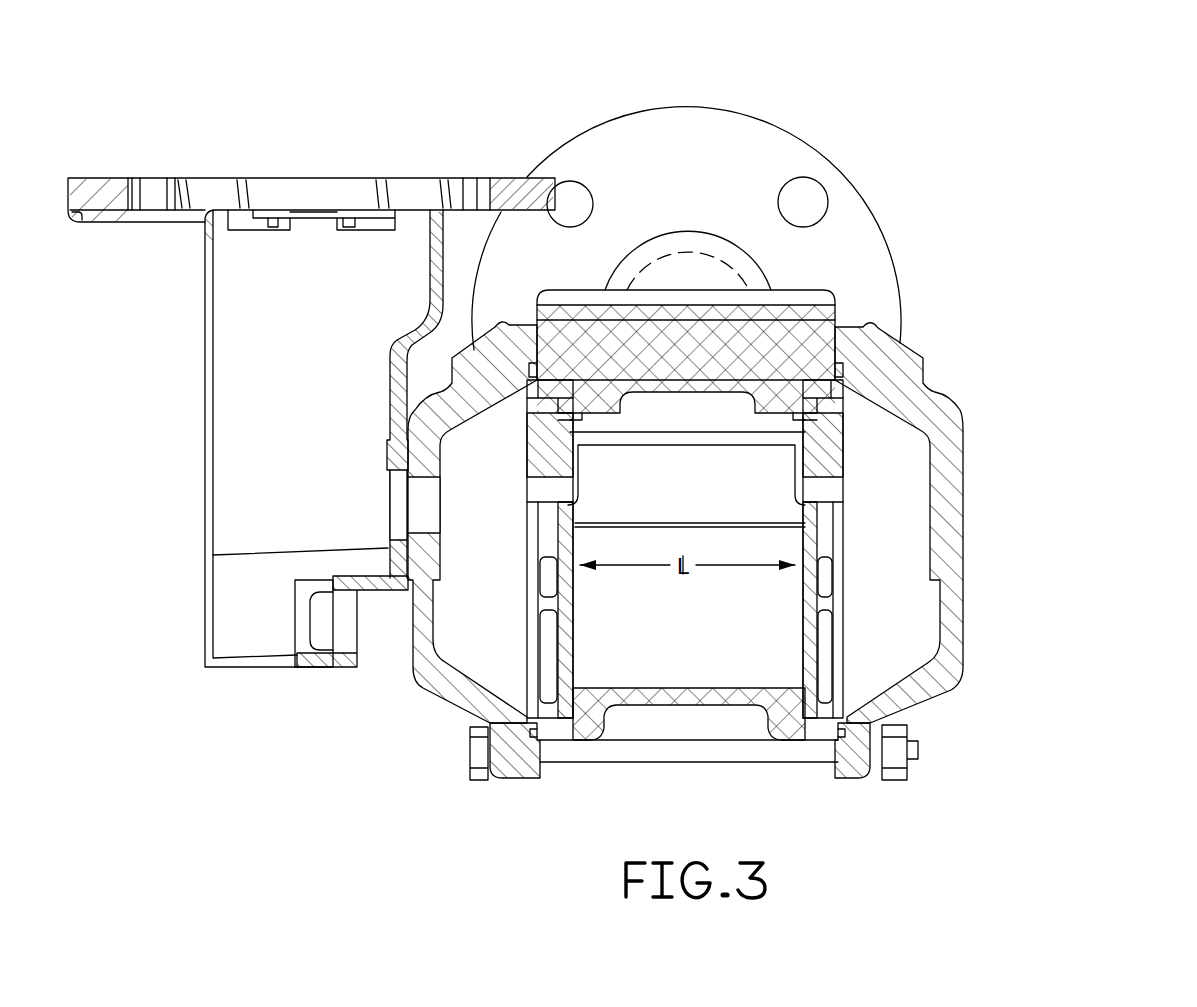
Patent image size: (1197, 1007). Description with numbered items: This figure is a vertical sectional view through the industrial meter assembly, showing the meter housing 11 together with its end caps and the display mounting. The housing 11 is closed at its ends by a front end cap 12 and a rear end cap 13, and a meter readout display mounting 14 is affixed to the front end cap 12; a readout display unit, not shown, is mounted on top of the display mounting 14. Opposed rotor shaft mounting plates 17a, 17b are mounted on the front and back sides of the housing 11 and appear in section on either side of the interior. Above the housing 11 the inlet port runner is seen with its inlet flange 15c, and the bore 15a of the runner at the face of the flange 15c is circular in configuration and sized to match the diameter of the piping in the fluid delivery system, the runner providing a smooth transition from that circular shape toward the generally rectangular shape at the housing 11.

The housing 11 is at (822, 285).
The front end cap 12 is at (460, 715).
The rear end cap 13 is at (967, 508).
The meter readout display mounting 14 is at (152, 163).
The bore of inlet port runner 15a is at (697, 168).
The inlet flange 15c is at (623, 147).
The rotor shaft mounting plate 17a is at (540, 550).
The rotor shaft mounting plate 17b is at (823, 542).